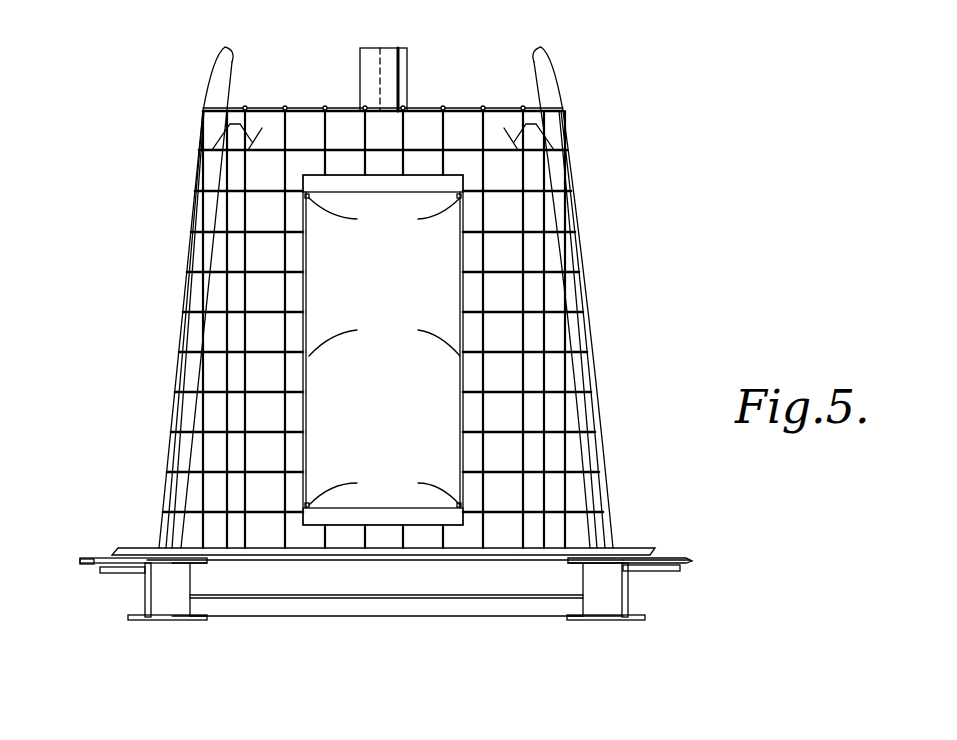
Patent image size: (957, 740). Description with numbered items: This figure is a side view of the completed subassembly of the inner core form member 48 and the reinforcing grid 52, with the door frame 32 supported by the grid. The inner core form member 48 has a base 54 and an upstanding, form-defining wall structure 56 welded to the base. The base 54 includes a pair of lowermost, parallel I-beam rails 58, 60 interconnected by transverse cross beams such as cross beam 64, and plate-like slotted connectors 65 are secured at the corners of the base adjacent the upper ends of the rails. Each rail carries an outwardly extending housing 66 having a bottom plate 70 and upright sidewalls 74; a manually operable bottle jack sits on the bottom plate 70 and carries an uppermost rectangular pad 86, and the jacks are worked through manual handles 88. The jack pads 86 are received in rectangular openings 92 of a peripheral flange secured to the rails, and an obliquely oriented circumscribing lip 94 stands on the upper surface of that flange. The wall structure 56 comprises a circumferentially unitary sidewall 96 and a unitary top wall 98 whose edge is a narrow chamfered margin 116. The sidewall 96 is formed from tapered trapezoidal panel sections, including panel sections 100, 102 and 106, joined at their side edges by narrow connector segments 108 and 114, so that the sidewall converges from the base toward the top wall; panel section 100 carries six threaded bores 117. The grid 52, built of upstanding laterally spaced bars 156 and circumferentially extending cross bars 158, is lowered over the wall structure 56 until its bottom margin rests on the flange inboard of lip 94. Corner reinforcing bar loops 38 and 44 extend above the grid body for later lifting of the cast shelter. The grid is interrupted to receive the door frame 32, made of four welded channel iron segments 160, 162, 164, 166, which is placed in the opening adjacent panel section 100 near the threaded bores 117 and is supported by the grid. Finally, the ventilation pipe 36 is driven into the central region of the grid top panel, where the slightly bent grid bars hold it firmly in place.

The door frame 32 is at (485, 264).
The ventilation pipe 36 is at (376, 55).
The reinforcing bar loop 38 is at (548, 50).
The reinforcing bar loop 44 is at (216, 62).
The inner core form member 48 is at (688, 272).
The grid 52 is at (580, 206).
The base 54 is at (745, 578).
The wall structure 56 is at (182, 411).
The I-beam rail 58 is at (575, 617).
The I-beam rail 60 is at (185, 602).
The cross beam 64 is at (330, 611).
The slotted connector 65 is at (85, 563).
The housing 66 is at (607, 602).
The bottom plate 70 is at (135, 621).
The sidewall 74 is at (152, 602).
The rectangular pad 86 is at (160, 546).
The manual handle 88 is at (112, 571).
The rectangular opening 92 is at (115, 557).
The lip 94 is at (620, 546).
The sidewall 96 is at (588, 406).
The top wall 98 is at (470, 126).
The panel section 100 is at (440, 422).
The panel section 102 is at (563, 164).
The panel section 106 is at (211, 237).
The connector segment 108 is at (563, 334).
The connector segment 114 is at (190, 352).
The chamfered margin 116 is at (358, 130).
The threaded bore 117 is at (384, 351).
The upstanding bar 156 is at (279, 142).
The cross bar 158 is at (206, 272).
The channel iron segment 160 is at (430, 185).
The channel iron segment 162 is at (304, 297).
The channel iron segment 164 is at (380, 526).
The channel iron segment 166 is at (465, 297).